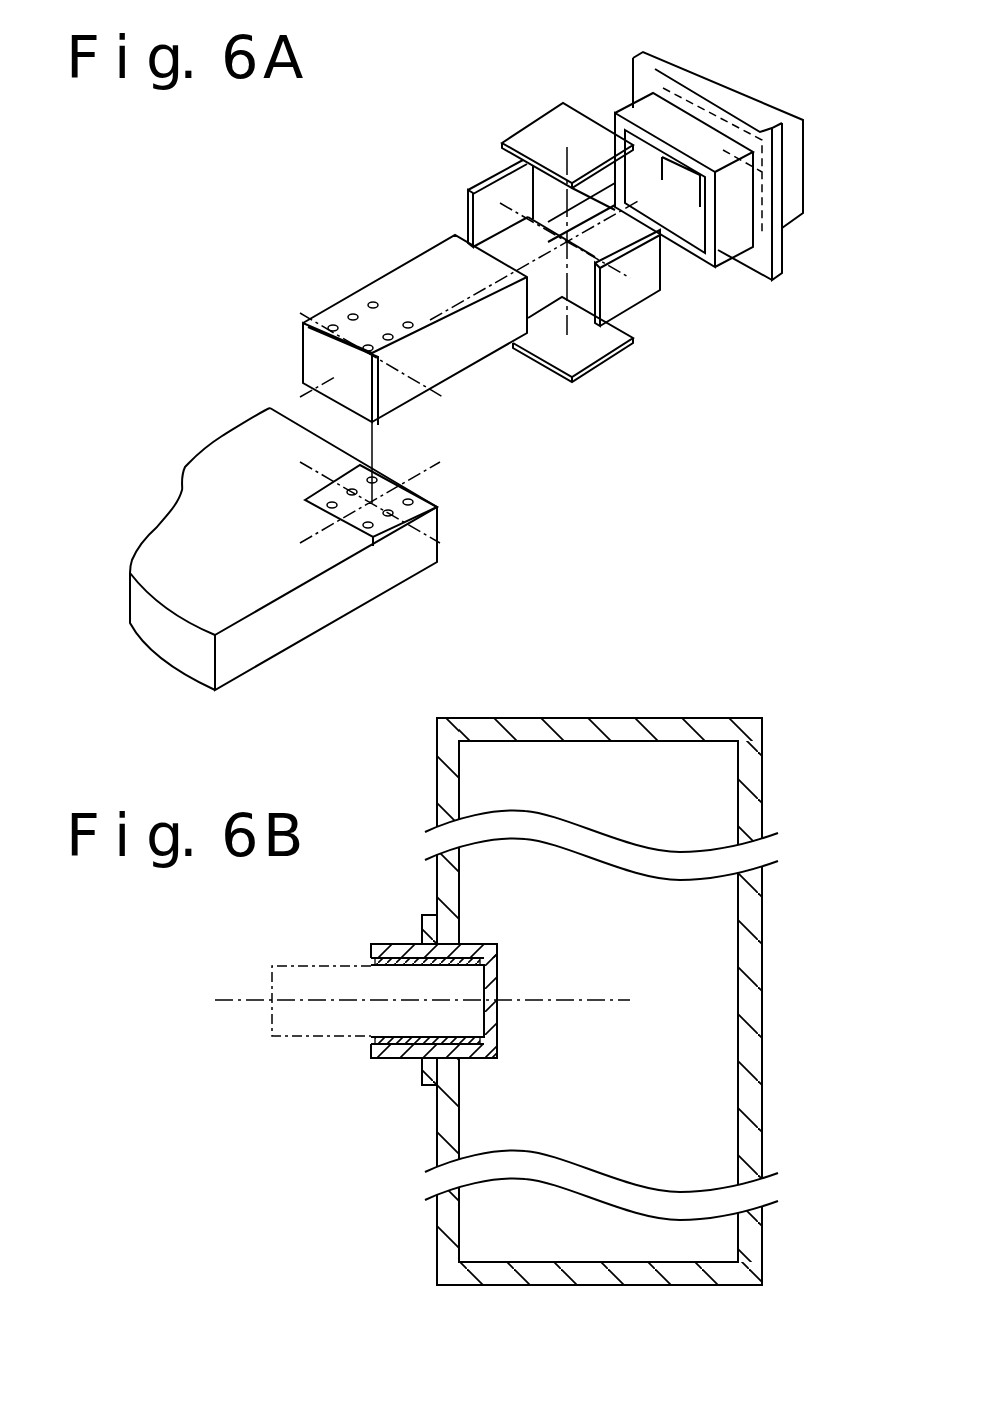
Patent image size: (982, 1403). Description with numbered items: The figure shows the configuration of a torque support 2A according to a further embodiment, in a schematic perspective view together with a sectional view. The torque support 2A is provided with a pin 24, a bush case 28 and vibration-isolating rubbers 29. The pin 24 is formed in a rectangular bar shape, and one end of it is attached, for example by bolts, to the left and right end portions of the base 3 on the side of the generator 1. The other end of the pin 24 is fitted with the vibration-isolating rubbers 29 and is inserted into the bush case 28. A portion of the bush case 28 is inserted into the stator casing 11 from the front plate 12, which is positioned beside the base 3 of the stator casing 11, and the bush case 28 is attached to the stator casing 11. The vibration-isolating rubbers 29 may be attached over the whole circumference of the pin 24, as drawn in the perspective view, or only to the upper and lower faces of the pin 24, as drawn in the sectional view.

In FIG. 6B, the generator 1 is at (645, 699).
In FIG. 6B, the stator casing 11 is at (567, 722).
In FIG. 6B, the front plate 12 is at (437, 770).
In FIG. 6A, the pin 24 is at (398, 277).
In FIG. 6B, the pin 24 is at (283, 1038).
In FIG. 6A, the bush case 28 is at (658, 70).
In FIG. 6B, the bush case 28 is at (497, 1015).
In FIG. 6A, the vibration-isolating rubbers 29 is at (538, 127).
In FIG. 6B, the vibration-isolating rubbers 29 is at (412, 1046).
In FIG. 6A, the torque support 2A is at (670, 375).
In FIG. 6A, the base 3 is at (438, 522).